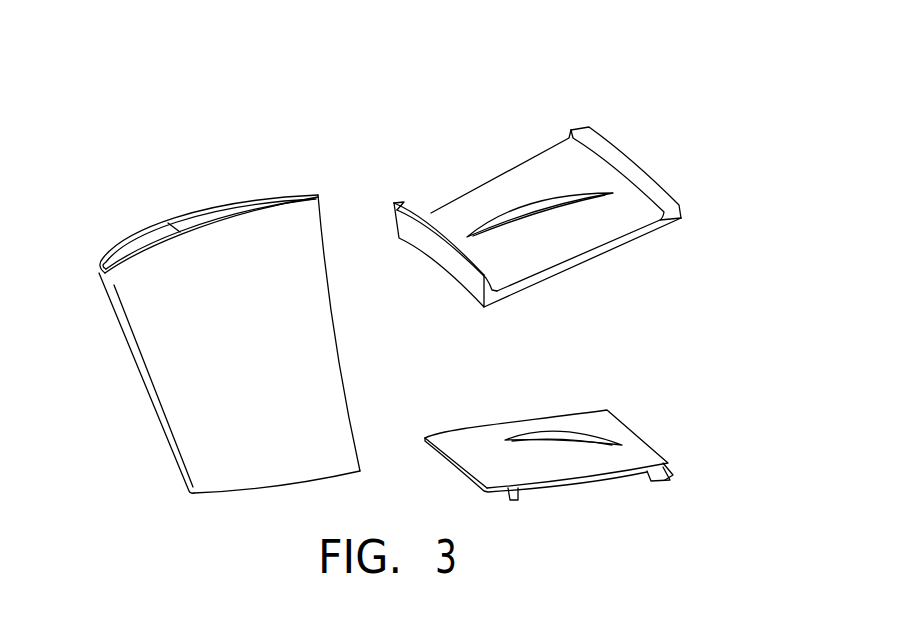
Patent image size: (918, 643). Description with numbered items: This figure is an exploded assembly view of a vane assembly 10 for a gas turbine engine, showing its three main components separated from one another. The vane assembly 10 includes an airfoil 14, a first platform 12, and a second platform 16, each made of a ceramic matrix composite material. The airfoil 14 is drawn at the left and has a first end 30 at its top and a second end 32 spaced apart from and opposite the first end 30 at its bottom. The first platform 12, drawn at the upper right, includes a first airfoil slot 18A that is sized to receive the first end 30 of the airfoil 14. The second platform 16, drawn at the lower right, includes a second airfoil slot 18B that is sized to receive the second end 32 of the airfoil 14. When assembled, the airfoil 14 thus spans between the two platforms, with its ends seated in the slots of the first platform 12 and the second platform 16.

The vane assembly 10 is at (703, 448).
The first platform 12 is at (628, 158).
The airfoil 14 is at (140, 323).
The second platform 16 is at (673, 474).
The first airfoil slot 18A is at (527, 207).
The second airfoil slot 18B is at (545, 433).
The first end 30 is at (233, 238).
The second end 32 is at (232, 463).